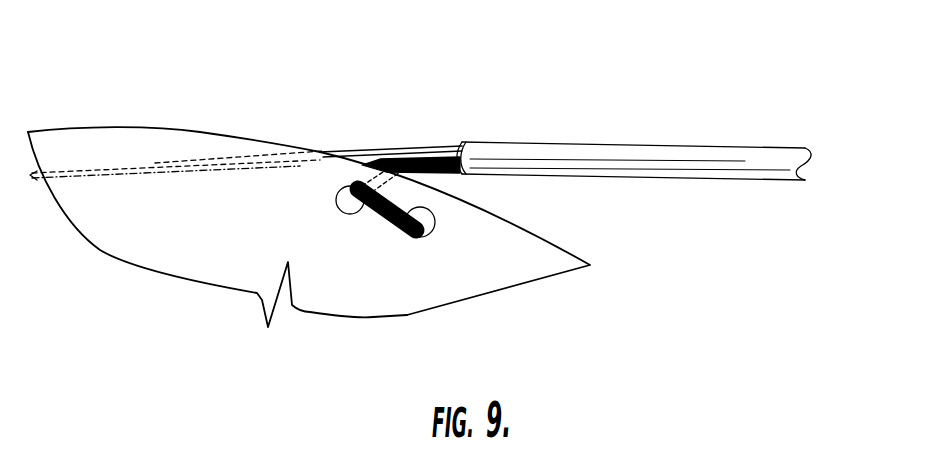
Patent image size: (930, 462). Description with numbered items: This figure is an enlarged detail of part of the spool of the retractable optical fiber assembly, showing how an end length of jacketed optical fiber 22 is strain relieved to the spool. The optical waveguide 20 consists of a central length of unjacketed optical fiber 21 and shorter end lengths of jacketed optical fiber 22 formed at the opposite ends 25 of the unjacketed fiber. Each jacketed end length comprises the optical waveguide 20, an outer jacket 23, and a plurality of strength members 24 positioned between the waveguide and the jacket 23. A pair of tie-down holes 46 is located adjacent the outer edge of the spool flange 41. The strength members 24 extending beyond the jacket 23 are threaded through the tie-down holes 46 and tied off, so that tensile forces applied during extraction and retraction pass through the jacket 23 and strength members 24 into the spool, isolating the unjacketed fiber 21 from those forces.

The optical waveguide 20 is at (565, 94).
The central length of unjacketed optical fiber 21 is at (80, 172).
The end length of jacketed optical fiber 22 is at (753, 147).
The outer jacket 23 is at (528, 153).
The strength members 24 is at (340, 205).
The end of the unjacketed optical fiber 25 is at (155, 163).
The spool flange 41 is at (522, 265).
The tie-down holes 46 is at (410, 237).